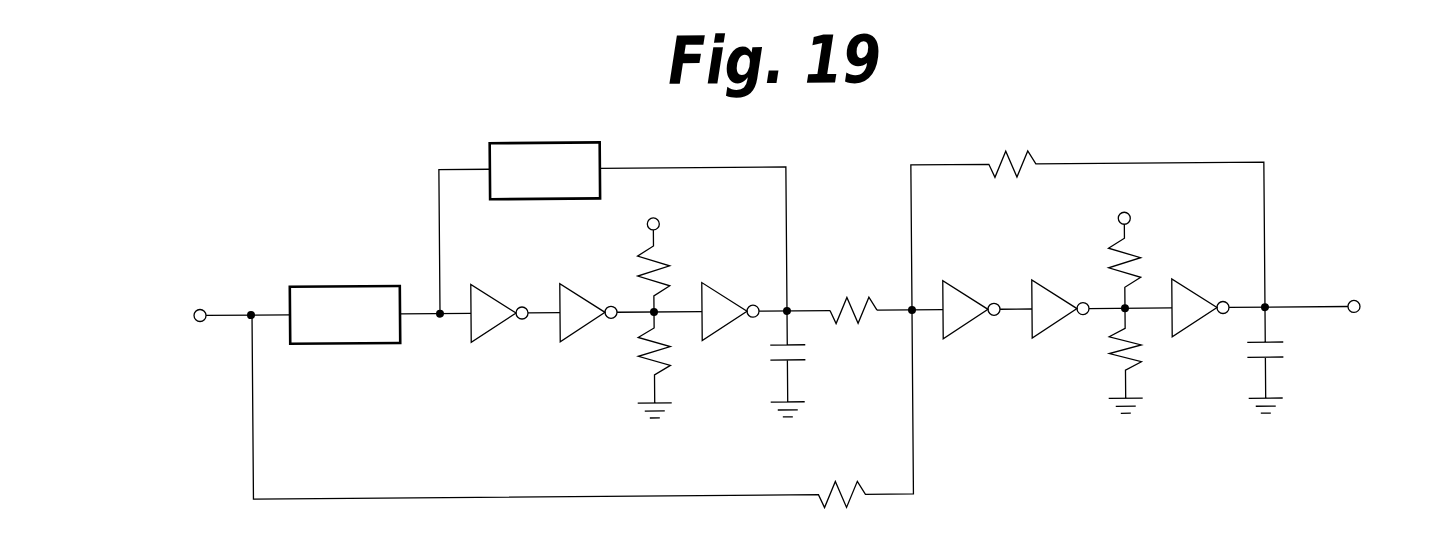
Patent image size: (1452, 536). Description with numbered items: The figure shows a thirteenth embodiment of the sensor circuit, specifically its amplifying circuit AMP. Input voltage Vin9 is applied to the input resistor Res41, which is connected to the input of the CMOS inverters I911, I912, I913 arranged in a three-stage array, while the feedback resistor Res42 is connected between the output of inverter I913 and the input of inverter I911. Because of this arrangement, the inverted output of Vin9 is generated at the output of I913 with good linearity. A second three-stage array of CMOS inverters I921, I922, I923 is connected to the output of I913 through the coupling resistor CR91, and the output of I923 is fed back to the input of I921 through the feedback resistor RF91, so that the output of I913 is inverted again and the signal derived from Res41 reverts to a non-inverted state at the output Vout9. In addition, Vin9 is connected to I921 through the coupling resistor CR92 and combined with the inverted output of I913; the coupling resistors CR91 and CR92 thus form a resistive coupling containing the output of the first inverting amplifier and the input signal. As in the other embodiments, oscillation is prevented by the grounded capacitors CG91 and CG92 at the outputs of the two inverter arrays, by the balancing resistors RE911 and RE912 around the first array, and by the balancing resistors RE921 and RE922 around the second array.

The input voltage Vin9 is at (166, 316).
The output voltage Vout9 is at (1395, 307).
The input resistor Res41 is at (345, 315).
The feedback resistor Res42 is at (613, 227).
The CMOS inverter I911 is at (500, 301).
The CMOS inverter I912 is at (589, 300).
The CMOS inverter I913 is at (728, 325).
The balancing resistor RE911 is at (691, 250).
The balancing resistor RE912 is at (617, 365).
The grounded capacitor CG91 is at (827, 363).
The coupling resistor CR91 is at (851, 293).
The coupling resistor CR92 is at (583, 411).
The amplifying circuit AMP is at (1136, 238).
The feedback resistor RF91 is at (1088, 213).
The CMOS inverter I921 is at (971, 295).
The CMOS inverter I922 is at (1060, 295).
The CMOS inverter I923 is at (1201, 322).
The balancing resistor RE921 is at (1166, 244).
The balancing resistor RE922 is at (1086, 361).
The grounded capacitor CG92 is at (1305, 359).